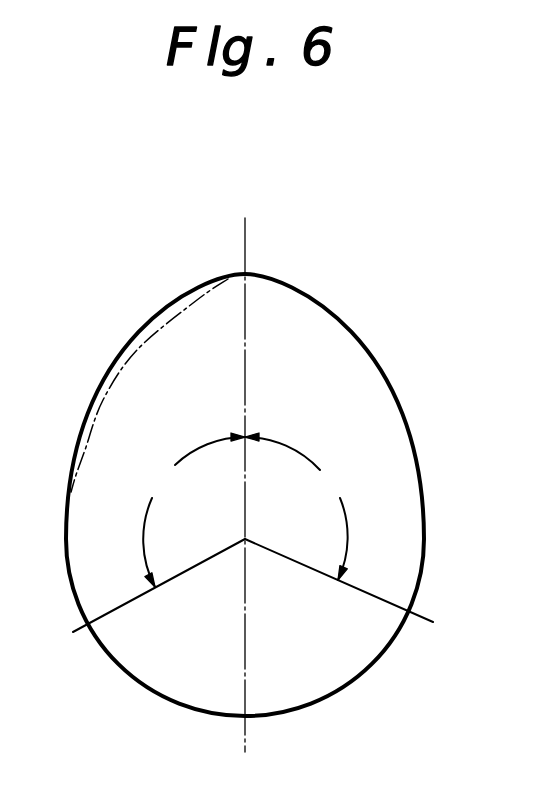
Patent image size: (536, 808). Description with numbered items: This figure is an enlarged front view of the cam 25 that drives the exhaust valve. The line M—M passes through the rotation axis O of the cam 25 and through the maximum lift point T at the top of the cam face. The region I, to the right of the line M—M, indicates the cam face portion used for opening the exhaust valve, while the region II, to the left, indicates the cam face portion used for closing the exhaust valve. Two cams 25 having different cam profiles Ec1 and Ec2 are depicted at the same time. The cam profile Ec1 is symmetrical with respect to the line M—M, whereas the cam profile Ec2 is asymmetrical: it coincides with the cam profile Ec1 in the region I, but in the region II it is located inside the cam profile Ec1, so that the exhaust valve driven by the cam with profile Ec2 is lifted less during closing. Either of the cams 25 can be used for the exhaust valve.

The cam 25 is at (238, 483).
The line M— M is at (245, 486).
The maximum lift point T is at (249, 268).
The rotation axis O is at (250, 543).
The cam profile Ec1 is at (124, 349).
The cam profile Ec2 is at (130, 358).
The region I is at (296, 506).
The region II is at (194, 510).